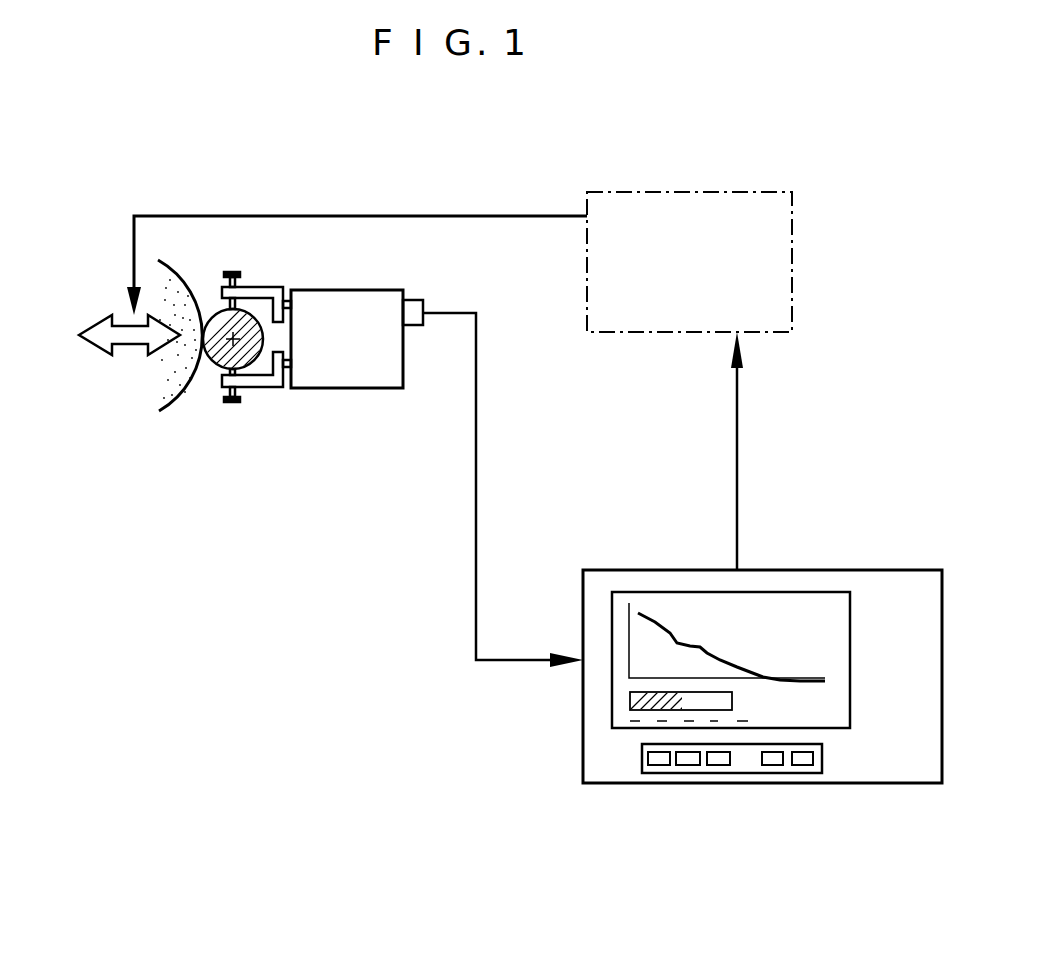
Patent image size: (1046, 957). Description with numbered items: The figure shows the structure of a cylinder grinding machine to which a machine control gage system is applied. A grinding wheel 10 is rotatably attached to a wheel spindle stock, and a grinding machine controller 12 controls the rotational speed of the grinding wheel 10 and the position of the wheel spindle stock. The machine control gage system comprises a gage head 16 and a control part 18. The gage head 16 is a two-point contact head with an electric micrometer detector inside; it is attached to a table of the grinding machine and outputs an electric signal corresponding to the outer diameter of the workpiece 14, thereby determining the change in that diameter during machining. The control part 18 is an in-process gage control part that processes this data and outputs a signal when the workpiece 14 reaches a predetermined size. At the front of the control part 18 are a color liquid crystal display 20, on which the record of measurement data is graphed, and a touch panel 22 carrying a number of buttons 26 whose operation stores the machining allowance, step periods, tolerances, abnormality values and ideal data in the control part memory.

The grinding wheel 10 is at (177, 382).
The grinding machine controller 12 is at (683, 192).
The workpiece 14 is at (213, 313).
The gage head 16 is at (297, 405).
The control part 18 is at (762, 683).
The color liquid crystal display 20 is at (850, 657).
The touch panel 22 is at (739, 800).
The buttons 26 is at (660, 765).